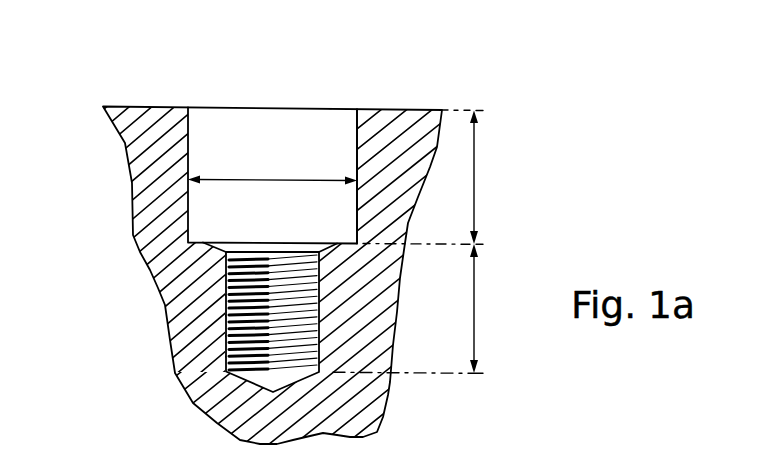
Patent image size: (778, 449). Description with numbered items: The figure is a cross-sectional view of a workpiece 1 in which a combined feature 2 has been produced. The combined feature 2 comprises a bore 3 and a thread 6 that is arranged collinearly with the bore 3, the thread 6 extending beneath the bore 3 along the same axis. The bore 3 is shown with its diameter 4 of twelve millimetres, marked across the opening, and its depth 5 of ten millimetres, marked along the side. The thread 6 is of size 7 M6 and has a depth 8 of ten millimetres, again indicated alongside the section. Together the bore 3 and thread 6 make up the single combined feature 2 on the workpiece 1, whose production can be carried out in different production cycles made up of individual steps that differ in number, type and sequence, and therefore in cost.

The workpiece 1 is at (130, 333).
The combined feature 2 is at (213, 95).
The bore 3 is at (315, 130).
The diameter 4 is at (258, 178).
The depth 5 is at (478, 180).
The thread 6 is at (292, 258).
The size 7 is at (305, 310).
The depth 8 is at (478, 313).